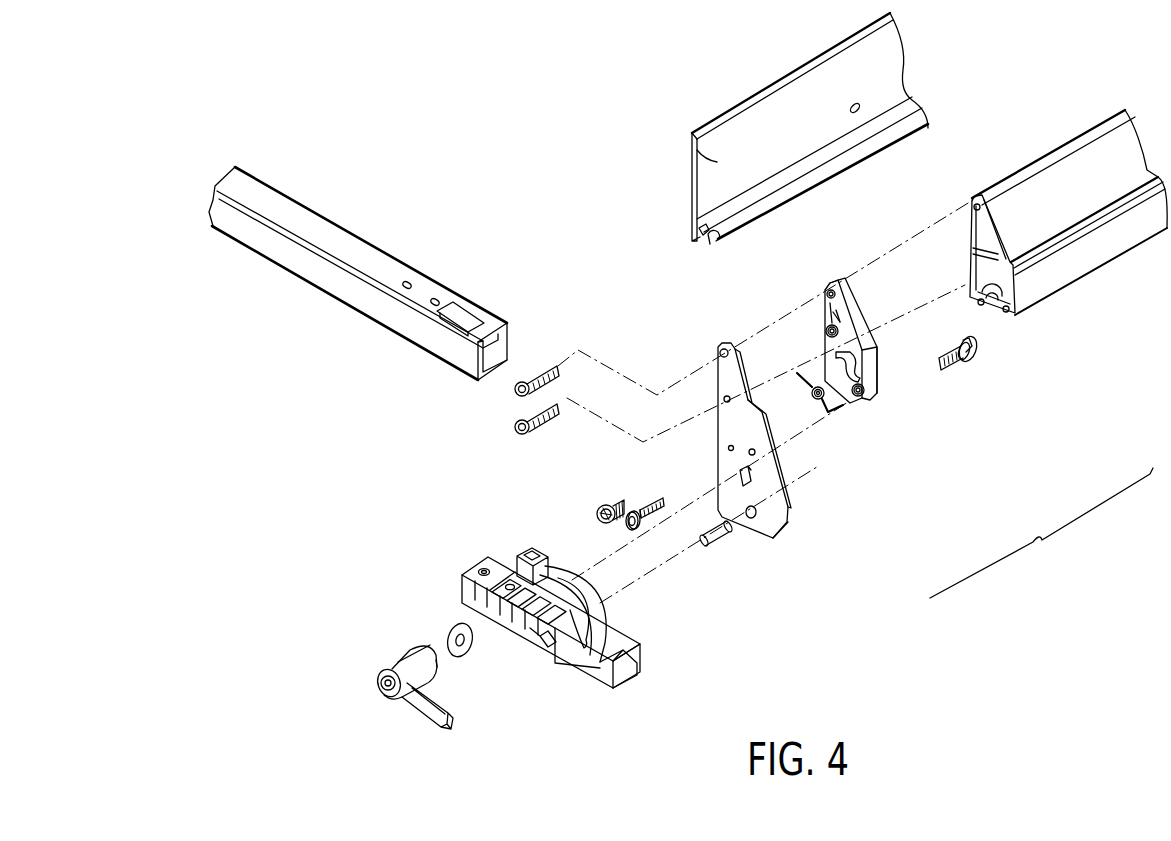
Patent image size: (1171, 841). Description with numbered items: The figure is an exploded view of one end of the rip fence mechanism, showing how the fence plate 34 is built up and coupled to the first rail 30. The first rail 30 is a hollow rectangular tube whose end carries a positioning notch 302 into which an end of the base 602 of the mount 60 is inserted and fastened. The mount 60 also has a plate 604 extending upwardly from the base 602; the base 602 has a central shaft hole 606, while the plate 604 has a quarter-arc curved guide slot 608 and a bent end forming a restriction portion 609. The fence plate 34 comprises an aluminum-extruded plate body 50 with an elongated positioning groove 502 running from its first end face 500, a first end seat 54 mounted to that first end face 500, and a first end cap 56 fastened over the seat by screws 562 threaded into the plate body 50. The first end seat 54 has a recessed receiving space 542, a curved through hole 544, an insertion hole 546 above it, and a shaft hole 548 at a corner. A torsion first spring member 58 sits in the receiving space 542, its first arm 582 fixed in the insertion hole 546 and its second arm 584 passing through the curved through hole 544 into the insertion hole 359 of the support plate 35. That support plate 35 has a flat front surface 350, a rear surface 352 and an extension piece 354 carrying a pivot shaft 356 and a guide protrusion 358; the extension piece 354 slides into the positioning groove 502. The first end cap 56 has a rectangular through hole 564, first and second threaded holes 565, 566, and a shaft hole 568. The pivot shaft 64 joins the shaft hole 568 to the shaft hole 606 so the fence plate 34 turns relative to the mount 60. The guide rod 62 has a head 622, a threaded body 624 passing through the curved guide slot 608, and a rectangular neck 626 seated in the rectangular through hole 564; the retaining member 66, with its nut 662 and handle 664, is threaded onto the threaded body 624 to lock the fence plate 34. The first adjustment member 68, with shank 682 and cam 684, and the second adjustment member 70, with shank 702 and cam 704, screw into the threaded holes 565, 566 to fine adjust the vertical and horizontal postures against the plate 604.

The first rail 30 is at (352, 273).
The positioning notch 302 is at (461, 313).
The support plate 35 is at (769, 146).
The flat front surface 350 is at (690, 145).
The rear surface 352 is at (700, 163).
The extension piece 354 is at (823, 160).
The pivot shaft 356 is at (698, 231).
The guide protrusion 358 is at (780, 201).
The insertion hole 359 is at (720, 242).
The plate body 50 is at (1025, 293).
The first end face 500 is at (973, 240).
The positioning groove 502 is at (962, 287).
The first end seat 54 is at (877, 400).
The receiving space 542 is at (826, 308).
The curved through hole 544 is at (880, 375).
The insertion hole 546 is at (836, 352).
The shaft hole 548 is at (866, 398).
The first spring member 58 is at (838, 441).
The first arm 582 is at (808, 378).
The second arm 584 is at (826, 409).
The first end cap 56 is at (789, 453).
The screws 562 is at (536, 373).
The rectangular through hole 564 is at (774, 519).
The first threaded hole 565 is at (730, 447).
The second threaded hole 566 is at (773, 478).
The shaft hole 568 is at (753, 517).
The pivot shaft 64 is at (718, 534).
The first adjustment member 68 is at (574, 482).
The shank 682 is at (630, 512).
The cam 684 is at (604, 508).
The second adjustment member 70 is at (634, 548).
The shank 702 is at (668, 510).
The cam 704 is at (654, 518).
The mount 60 is at (512, 632).
The base 602 is at (486, 606).
The plate 604 is at (460, 579).
The shaft hole 606 is at (548, 645).
The curved guide slot 608 is at (568, 668).
The restriction portion 609 is at (530, 553).
The retaining member 66 is at (355, 681).
The nut 662 is at (387, 661).
The handle 664 is at (425, 713).
The guide rod 62 is at (1003, 396).
The head 622 is at (984, 350).
The threaded body 624 is at (966, 364).
The rectangular neck 626 is at (962, 367).
The fence plate 34 is at (1041, 533).